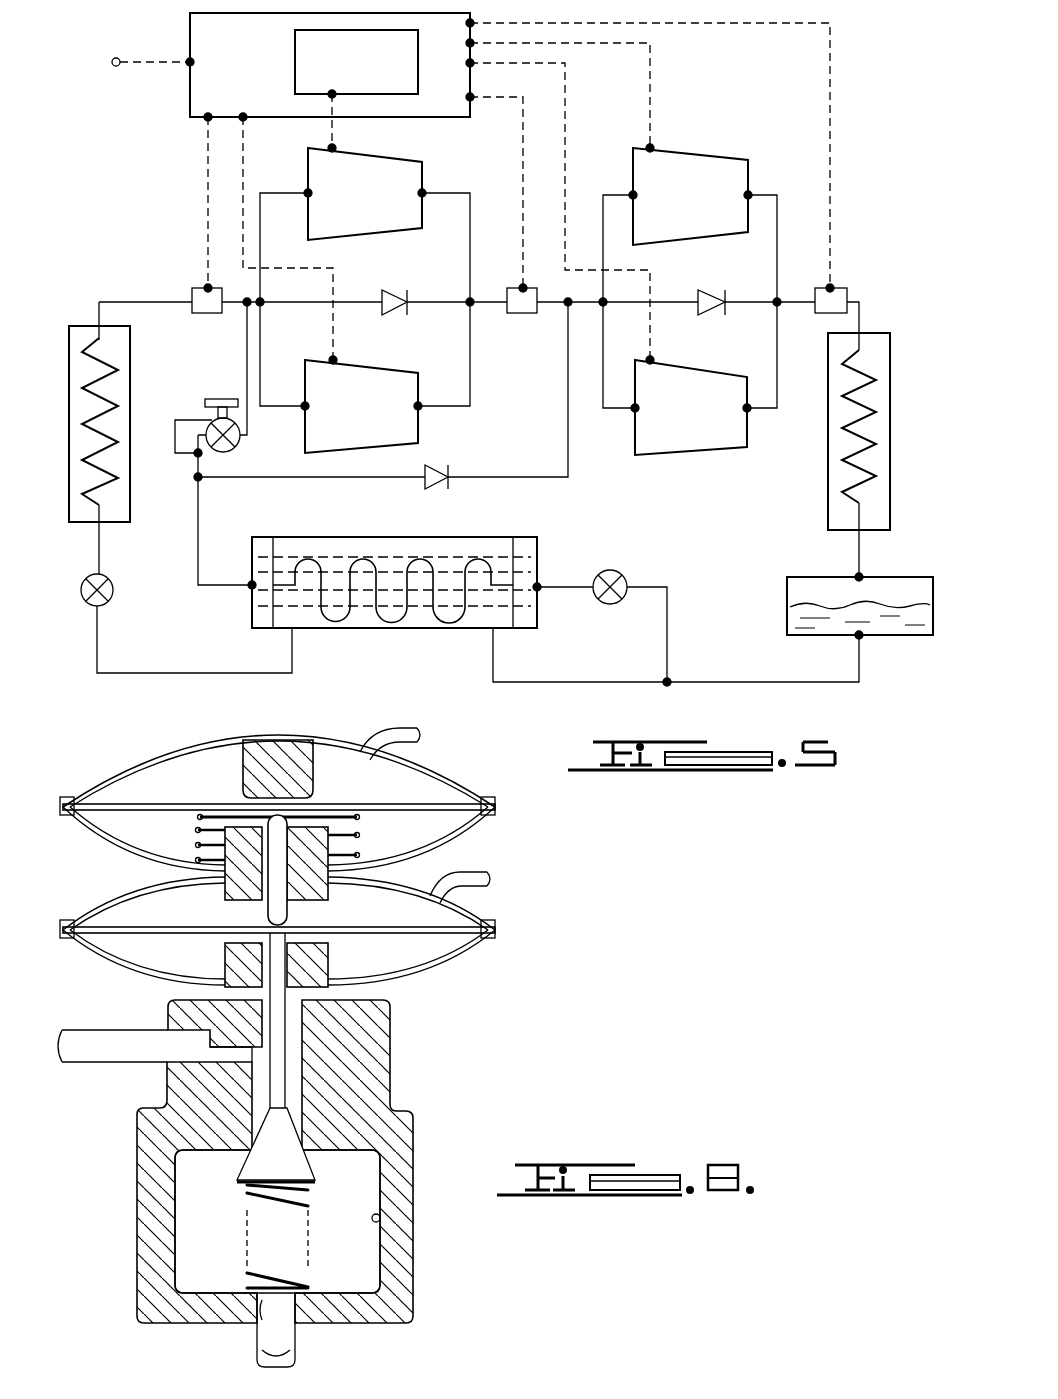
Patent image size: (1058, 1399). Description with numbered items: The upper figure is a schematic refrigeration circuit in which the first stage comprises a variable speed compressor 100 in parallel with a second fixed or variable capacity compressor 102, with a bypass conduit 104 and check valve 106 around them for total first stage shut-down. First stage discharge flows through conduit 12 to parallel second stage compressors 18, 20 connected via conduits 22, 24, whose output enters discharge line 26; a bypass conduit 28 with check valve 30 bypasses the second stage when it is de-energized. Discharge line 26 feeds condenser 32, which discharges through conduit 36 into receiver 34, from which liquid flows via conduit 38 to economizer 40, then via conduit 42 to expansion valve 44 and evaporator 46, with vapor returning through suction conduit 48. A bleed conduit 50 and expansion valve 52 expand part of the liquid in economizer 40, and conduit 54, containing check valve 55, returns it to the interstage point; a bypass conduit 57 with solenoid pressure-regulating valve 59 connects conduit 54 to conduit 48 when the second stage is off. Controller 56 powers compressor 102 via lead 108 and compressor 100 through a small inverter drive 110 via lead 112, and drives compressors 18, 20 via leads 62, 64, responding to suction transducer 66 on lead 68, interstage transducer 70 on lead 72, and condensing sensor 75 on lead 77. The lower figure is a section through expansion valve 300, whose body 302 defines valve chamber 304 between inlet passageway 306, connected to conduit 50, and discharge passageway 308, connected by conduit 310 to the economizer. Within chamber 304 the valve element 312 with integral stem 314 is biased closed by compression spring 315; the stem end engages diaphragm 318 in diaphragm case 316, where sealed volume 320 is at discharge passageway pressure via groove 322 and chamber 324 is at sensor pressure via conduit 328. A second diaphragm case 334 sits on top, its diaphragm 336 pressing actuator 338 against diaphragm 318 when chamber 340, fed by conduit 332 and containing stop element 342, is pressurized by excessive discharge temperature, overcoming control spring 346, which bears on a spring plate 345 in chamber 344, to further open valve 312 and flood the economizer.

In FIG. 5, the controller 56 is at (190, 27).
In FIG. 5, the inverter drive 110 is at (295, 43).
In FIG. 5, the lead 68 is at (205, 158).
In FIG. 5, the lead 108 is at (243, 165).
In FIG. 5, the lead 112 is at (340, 136).
In FIG. 5, the variable speed compressor 100 is at (422, 168).
In FIG. 5, the transducer 66 is at (205, 290).
In FIG. 5, the suction conduit 48 is at (125, 300).
In FIG. 5, the bypass conduit 57 is at (245, 348).
In FIG. 5, the check valve 106 is at (395, 290).
In FIG. 5, the bypass conduit 104 is at (418, 308).
In FIG. 5, the fixed or variable capacity compressor 102 is at (383, 362).
In FIG. 5, the lead 72 is at (522, 246).
In FIG. 5, the transducer 70 is at (520, 315).
In FIG. 5, the conduit 12 is at (570, 308).
In FIG. 5, the electrical lead 62 is at (655, 50).
In FIG. 5, the electrical lead 64 is at (566, 110).
In FIG. 5, the lead 77 is at (762, 25).
In FIG. 5, the second stage compressor 18 is at (700, 150).
In FIG. 5, the conduit 24 is at (608, 195).
In FIG. 5, the bypass conduit 28 is at (730, 300).
In FIG. 5, the check valve 30 is at (712, 312).
In FIG. 5, the discharge line 26 is at (862, 302).
In FIG. 5, the condenser 32 is at (890, 340).
In FIG. 5, the sensor 75 is at (822, 315).
In FIG. 5, the conduit 22 is at (607, 410).
In FIG. 5, the second stage compressor 20 is at (700, 456).
In FIG. 5, the conduit 54 is at (565, 390).
In FIG. 5, the check valve 55 is at (442, 465).
In FIG. 5, the pressure-regulating valve 59 is at (228, 452).
In FIG. 5, the evaporator 46 is at (130, 360).
In FIG. 5, the expansion valve 44 is at (112, 586).
In FIG. 5, the conduit 42 is at (155, 673).
In FIG. 5, the economizer 40 is at (490, 537).
In FIG. 5, the expansion valve 52 is at (618, 570).
In FIG. 5, the bleed conduit 50 is at (667, 604).
In FIG. 6, the bleed conduit 50 is at (285, 1343).
In FIG. 5, the conduit 36 is at (859, 552).
In FIG. 5, the receiver 34 is at (882, 635).
In FIG. 5, the conduit 38 is at (600, 682).
In FIG. 6, the chamber 340 is at (165, 778).
In FIG. 6, the conduit 332 is at (400, 735).
In FIG. 6, the stop element 342 is at (310, 777).
In FIG. 6, the spring plate 345 is at (250, 815).
In FIG. 6, the diaphragm 336 is at (408, 807).
In FIG. 6, the second diaphragm case 334 is at (496, 808).
In FIG. 6, the chamber 344 is at (110, 830).
In FIG. 6, the control spring 346 is at (358, 836).
In FIG. 6, the conduit 328 is at (487, 878).
In FIG. 6, the chamber 324 is at (115, 900).
In FIG. 6, the actuator 338 is at (268, 905).
In FIG. 6, the diaphragm 318 is at (385, 928).
In FIG. 6, the diaphragm case 316 is at (496, 930).
In FIG. 6, the sealed volume 320 is at (120, 948).
In FIG. 6, the stem 314 is at (300, 975).
In FIG. 6, the expansion valve 300 is at (455, 1010).
In FIG. 6, the groove 322 is at (265, 1012).
In FIG. 6, the refrigerant discharge passageway 308 is at (210, 1052).
In FIG. 6, the conduit 310 is at (100, 1063).
In FIG. 6, the body 302 is at (378, 1065).
In FIG. 6, the expansion valve 312 is at (260, 1166).
In FIG. 6, the compression spring 315 is at (255, 1200).
In FIG. 6, the valve chamber 304 is at (380, 1218).
In FIG. 6, the refrigerant inlet passageway 306 is at (260, 1320).